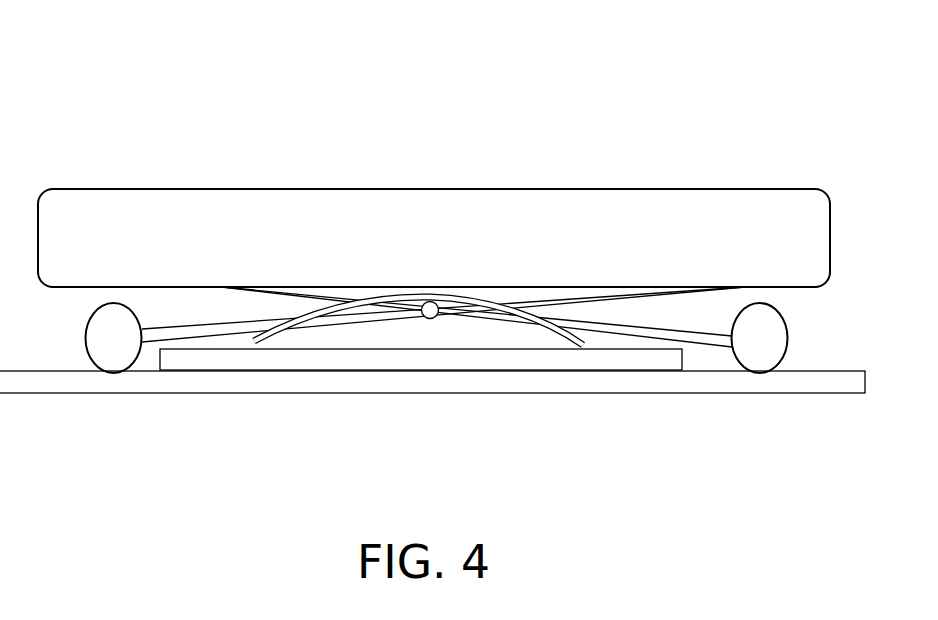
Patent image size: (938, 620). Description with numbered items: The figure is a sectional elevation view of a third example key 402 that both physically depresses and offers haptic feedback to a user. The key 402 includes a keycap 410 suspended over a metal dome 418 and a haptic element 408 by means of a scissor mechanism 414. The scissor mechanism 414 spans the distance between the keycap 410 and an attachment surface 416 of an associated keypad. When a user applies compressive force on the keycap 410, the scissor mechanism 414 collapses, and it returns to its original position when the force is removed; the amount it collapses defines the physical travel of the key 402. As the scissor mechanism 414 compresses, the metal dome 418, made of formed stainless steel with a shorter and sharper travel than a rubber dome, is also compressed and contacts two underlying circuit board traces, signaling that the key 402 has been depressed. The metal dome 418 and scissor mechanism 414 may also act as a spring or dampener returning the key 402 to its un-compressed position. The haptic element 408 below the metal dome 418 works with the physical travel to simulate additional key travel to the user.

The key 402 is at (114, 80).
The keycap 410 is at (451, 249).
The haptic element 408 is at (543, 362).
The scissor mechanism 414 is at (192, 340).
The attachment surface 416 is at (792, 372).
The metal dome 418 is at (280, 337).